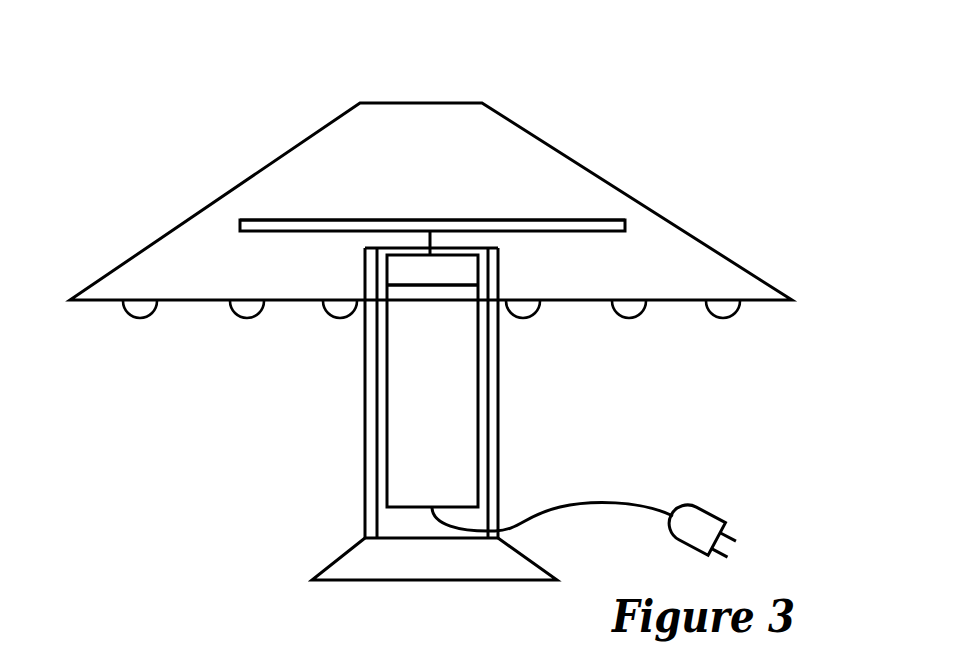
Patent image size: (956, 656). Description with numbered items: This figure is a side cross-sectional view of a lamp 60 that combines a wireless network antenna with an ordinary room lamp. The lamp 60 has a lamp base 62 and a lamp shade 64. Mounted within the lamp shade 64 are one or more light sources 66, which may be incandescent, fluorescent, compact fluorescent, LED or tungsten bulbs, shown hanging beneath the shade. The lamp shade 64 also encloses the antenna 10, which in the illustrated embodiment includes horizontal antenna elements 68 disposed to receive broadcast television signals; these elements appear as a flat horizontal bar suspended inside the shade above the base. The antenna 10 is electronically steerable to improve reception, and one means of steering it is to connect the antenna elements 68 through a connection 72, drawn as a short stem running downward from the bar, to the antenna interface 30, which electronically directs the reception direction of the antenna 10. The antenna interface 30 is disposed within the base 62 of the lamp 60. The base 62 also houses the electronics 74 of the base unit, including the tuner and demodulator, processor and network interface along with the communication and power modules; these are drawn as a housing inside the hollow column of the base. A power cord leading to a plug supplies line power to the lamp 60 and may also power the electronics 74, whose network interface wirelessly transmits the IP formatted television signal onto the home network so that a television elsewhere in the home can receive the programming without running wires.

The antenna 10 is at (290, 220).
The antenna interface 30 is at (400, 265).
The lamp 60 is at (276, 113).
The lamp base 62 is at (367, 410).
The lamp shade 64 is at (621, 190).
The light sources 66 is at (122, 313).
The horizontal antenna elements 68 is at (534, 219).
The connection 72 is at (432, 240).
The electronics 74 is at (500, 413).